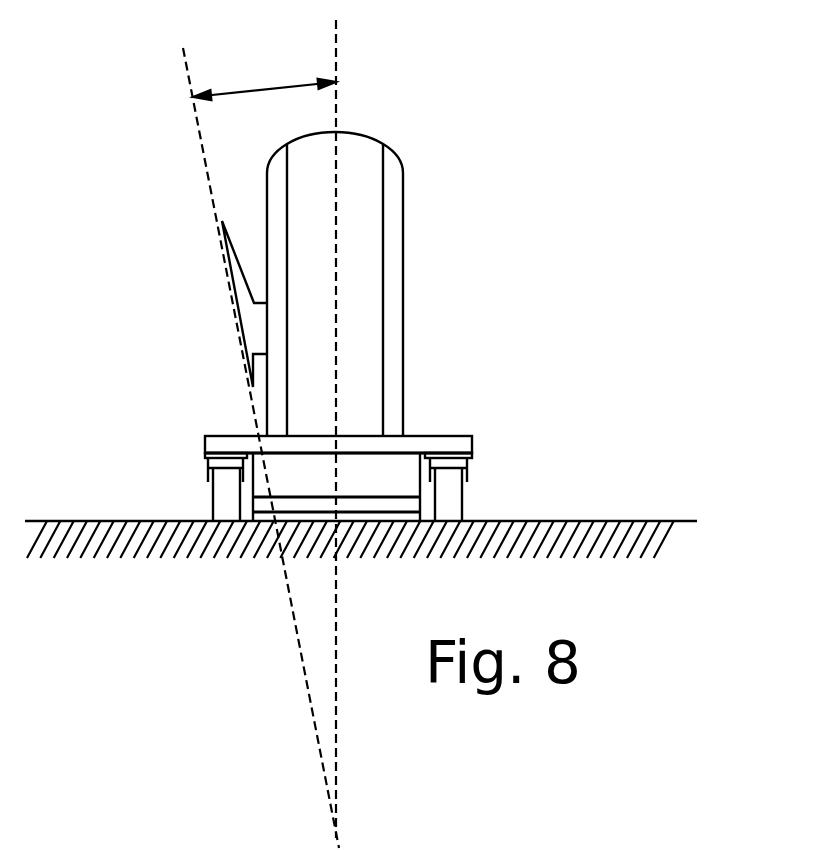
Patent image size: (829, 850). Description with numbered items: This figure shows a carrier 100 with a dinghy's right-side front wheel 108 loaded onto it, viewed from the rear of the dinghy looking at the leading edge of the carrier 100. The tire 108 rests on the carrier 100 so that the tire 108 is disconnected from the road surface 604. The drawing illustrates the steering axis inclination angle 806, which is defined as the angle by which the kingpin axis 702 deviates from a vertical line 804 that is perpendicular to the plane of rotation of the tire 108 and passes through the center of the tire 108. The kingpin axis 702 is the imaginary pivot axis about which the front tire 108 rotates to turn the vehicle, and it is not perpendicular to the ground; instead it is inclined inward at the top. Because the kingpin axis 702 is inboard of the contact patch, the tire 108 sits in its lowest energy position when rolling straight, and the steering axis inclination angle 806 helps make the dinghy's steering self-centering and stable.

The carrier 100 is at (204, 446).
The front wheel 108 is at (403, 226).
The road surface 604 is at (622, 520).
The kingpin axis 702 is at (208, 177).
The vertical line 804 is at (333, 43).
The steering axis inclination angle 806 is at (288, 83).